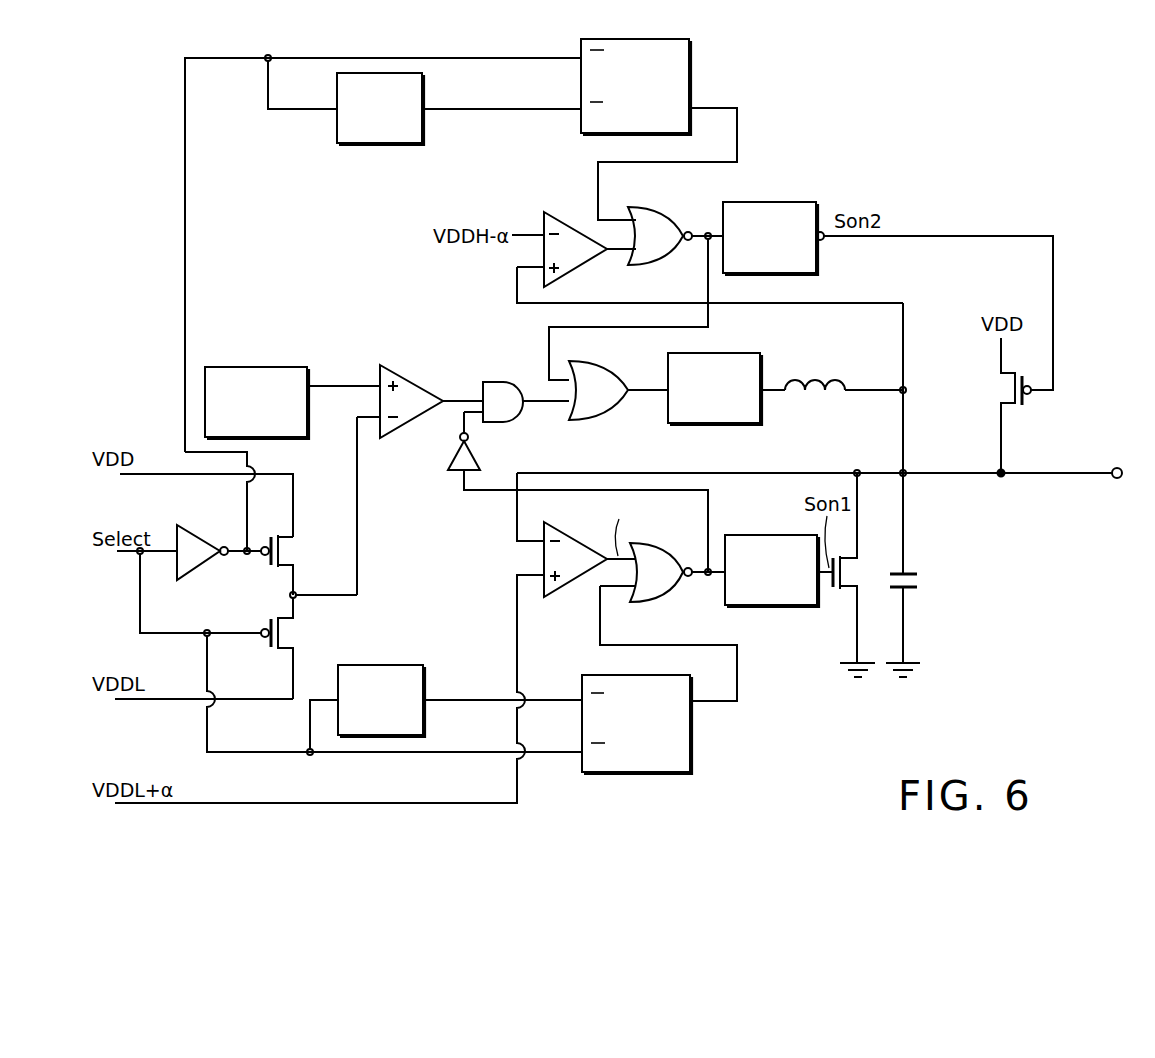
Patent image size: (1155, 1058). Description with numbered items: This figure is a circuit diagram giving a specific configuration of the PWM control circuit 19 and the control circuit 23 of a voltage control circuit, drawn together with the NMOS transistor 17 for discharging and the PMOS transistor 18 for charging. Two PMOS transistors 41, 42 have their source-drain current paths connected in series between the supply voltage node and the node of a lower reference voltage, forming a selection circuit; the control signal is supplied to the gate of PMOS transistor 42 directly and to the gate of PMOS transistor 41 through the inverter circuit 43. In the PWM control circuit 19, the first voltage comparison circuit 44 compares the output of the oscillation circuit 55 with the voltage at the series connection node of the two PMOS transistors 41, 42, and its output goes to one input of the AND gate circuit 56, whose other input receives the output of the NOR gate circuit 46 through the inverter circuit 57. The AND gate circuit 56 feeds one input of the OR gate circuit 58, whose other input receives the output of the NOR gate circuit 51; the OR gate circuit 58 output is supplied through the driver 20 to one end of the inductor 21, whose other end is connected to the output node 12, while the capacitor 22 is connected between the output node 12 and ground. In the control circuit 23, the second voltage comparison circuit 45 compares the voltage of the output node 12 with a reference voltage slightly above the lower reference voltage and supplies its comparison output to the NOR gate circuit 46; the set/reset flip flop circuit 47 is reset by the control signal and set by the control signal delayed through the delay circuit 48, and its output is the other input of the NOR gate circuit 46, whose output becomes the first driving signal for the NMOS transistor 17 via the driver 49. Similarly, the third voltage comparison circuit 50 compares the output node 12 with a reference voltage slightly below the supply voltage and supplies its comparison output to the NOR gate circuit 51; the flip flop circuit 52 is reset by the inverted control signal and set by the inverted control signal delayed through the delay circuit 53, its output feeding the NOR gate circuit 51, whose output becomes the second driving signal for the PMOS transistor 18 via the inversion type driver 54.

The output node 12 is at (1117, 467).
The NMOS transistor for discharging 17 is at (858, 566).
The PMOS transistor for charging 18 is at (1000, 389).
The PWM control circuit 19 is at (343, 355).
The driver 20 is at (731, 425).
The inductor 21 is at (815, 398).
The capacitor 22 is at (922, 578).
The control circuit 23 is at (555, 780).
The PMOS transistor 41 is at (295, 552).
The PMOS transistor 42 is at (296, 633).
The inverter circuit 43 is at (200, 538).
The first voltage comparison circuit 44 is at (413, 366).
The second voltage comparison circuit 45 is at (567, 584).
The NOR gate circuit 46 is at (665, 597).
The flip flop circuit 47 is at (668, 774).
The delay circuit 48 is at (396, 665).
The driver 49 is at (787, 607).
The third voltage comparison circuit 50 is at (560, 213).
The NOR gate circuit 51 is at (666, 207).
The flip flop circuit 52 is at (690, 64).
The delay circuit 53 is at (424, 137).
The inversion type driver 54 is at (788, 202).
The oscillation circuit 55 is at (280, 367).
The AND gate circuit 56 is at (500, 382).
The inverter circuit 57 is at (447, 461).
The OR gate circuit 58 is at (606, 418).